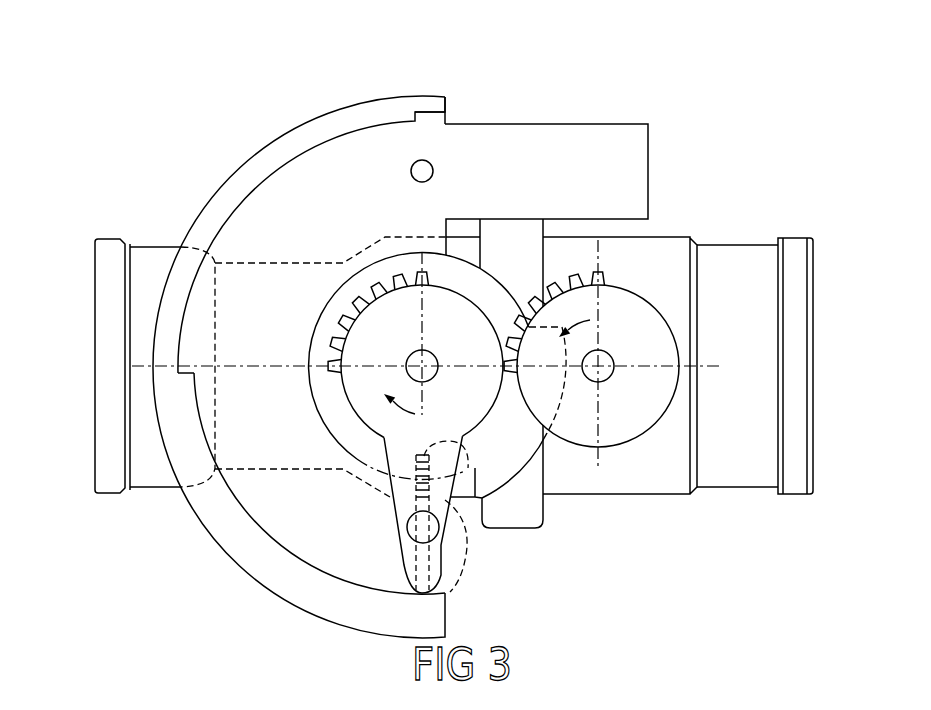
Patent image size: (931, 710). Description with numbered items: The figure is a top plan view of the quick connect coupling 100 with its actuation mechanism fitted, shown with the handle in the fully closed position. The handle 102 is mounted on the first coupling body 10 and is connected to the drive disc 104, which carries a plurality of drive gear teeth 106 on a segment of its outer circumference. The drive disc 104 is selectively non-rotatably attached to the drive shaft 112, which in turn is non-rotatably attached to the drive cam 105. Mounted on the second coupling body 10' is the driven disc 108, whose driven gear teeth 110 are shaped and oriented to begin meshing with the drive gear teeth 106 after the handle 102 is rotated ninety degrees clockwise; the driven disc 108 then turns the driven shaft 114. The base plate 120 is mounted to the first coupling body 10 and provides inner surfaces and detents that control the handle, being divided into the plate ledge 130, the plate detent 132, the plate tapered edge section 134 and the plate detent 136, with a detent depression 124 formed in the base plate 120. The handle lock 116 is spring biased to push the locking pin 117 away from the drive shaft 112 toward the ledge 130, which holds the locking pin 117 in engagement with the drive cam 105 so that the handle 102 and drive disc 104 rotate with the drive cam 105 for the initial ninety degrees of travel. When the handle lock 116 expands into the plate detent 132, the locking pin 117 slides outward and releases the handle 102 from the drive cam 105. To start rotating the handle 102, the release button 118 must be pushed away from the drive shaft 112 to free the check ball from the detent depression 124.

The quick connect coupling 100 is at (594, 82).
The first coupling body 10 is at (138, 384).
The second coupling body 10' is at (730, 346).
The handle 102 is at (395, 508).
The drive disc 104 is at (367, 402).
The drive cam 105 is at (322, 388).
The drive gear teeth 106 is at (373, 288).
The driven disc 108 is at (620, 432).
The driven gear teeth 110 is at (568, 247).
The drive shaft 112 is at (408, 361).
The driven shaft 114 is at (607, 358).
The handle lock 116 is at (440, 503).
The locking pin 117 is at (461, 443).
The release button 118 is at (430, 531).
The base plate 120 is at (268, 517).
The detent depression 124 is at (432, 172).
The plate ledge 130 is at (305, 587).
The plate detent 132 is at (196, 360).
The plate tapered edge section 134 is at (390, 107).
The plate detent 136 is at (434, 124).